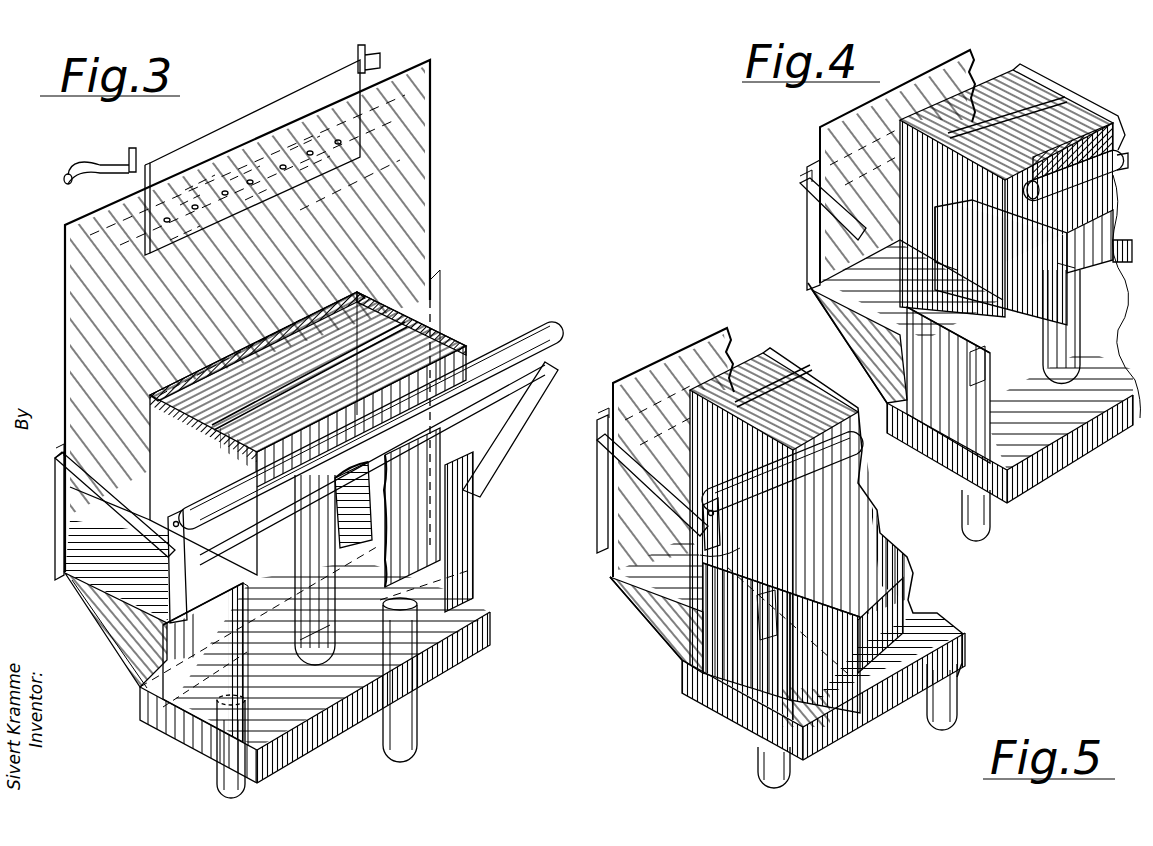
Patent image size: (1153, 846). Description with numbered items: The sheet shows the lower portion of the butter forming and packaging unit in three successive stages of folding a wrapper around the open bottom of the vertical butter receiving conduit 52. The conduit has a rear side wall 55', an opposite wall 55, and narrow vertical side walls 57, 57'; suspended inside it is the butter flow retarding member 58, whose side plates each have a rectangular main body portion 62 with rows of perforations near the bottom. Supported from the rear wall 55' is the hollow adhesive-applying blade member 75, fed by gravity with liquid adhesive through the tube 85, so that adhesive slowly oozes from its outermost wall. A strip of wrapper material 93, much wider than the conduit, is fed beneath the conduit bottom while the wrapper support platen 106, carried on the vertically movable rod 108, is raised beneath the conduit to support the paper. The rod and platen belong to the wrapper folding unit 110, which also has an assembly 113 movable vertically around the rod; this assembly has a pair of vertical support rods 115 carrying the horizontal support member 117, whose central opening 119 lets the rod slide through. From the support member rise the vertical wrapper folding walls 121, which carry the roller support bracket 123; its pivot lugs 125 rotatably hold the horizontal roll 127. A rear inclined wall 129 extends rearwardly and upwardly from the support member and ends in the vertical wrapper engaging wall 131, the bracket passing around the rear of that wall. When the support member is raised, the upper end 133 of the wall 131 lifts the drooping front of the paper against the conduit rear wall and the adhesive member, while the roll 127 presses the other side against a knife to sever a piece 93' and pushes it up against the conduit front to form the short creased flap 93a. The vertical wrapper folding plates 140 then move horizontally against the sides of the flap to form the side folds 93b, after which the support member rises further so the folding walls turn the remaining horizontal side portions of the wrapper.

In FIG. 3, the butter receiving conduit 52 is at (142, 453).
In FIG. 4, the butter receiving conduit 52 is at (1118, 130).
In FIG. 5, the butter receiving conduit 52 is at (826, 534).
In FIG. 3, the side wall of the conduit 55 is at (411, 323).
In FIG. 4, the side wall of the conduit 55 is at (1073, 151).
In FIG. 3, the rear side wall of the conduit 55' is at (257, 346).
In FIG. 3, the narrow vertical side wall of the conduit 57 is at (212, 450).
In FIG. 3, the narrow vertical side wall of the conduit 57' is at (455, 305).
In FIG. 3, the butter flow retarding member 58 is at (305, 368).
In FIG. 4, the butter flow retarding member 58 is at (1064, 88).
In FIG. 5, the butter flow retarding member 58 is at (826, 368).
In FIG. 3, the rectangular main body portion 62 is at (384, 300).
In FIG. 3, the adhesive-applying blade member 75 is at (138, 236).
In FIG. 3, the tube 85 is at (92, 170).
In FIG. 4, the strip of wrapper material 93 is at (889, 166).
In FIG. 5, the strip of wrapper material 93 is at (673, 452).
In FIG. 3, the severed piece of wrapping paper 93' is at (222, 316).
In FIG. 3, the short creased flap 93a is at (455, 436).
In FIG. 4, the short creased flap 93a is at (1060, 250).
In FIG. 5, the short creased flap 93a is at (725, 548).
In FIG. 4, the side folds 93b is at (938, 210).
In FIG. 3, the wrapper support platen 106 is at (480, 490).
In FIG. 3, the vertically movable rod 108 is at (336, 590).
In FIG. 4, the vertically movable rod 108 is at (1080, 333).
In FIG. 3, the wrapper folding unit 110 is at (131, 702).
In FIG. 3, the assembly 113 is at (181, 750).
In FIG. 3, the vertical support rods 115 is at (383, 758).
In FIG. 4, the vertical support rods 115 is at (992, 530).
In FIG. 5, the vertical support rods 115 is at (755, 768).
In FIG. 3, the horizontal support member 117 is at (480, 610).
In FIG. 4, the horizontal support member 117 is at (1010, 426).
In FIG. 5, the horizontal support member 117 is at (823, 686).
In FIG. 3, the central opening 119 is at (308, 662).
In FIG. 3, the vertical wrapper folding walls 121 is at (455, 553).
In FIG. 4, the vertical wrapper folding walls 121 is at (960, 385).
In FIG. 5, the vertical wrapper folding walls 121 is at (748, 578).
In FIG. 3, the roller support bracket 123 is at (166, 580).
In FIG. 5, the roller support bracket 123 is at (667, 497).
In FIG. 3, the pivot lugs 125 is at (560, 354).
In FIG. 4, the pivot lugs 125 is at (1075, 175).
In FIG. 3, the horizontal roll 127 is at (345, 478).
In FIG. 5, the horizontal roll 127 is at (826, 470).
In FIG. 3, the rear inclined wall 129 is at (120, 660).
In FIG. 4, the rear inclined wall 129 is at (812, 292).
In FIG. 5, the rear inclined wall 129 is at (656, 604).
In FIG. 3, the vertical wrapper engaging wall 131 is at (55, 517).
In FIG. 4, the vertical wrapper engaging wall 131 is at (806, 241).
In FIG. 3, the upper end of the wrapper engaging wall 133 is at (56, 445).
In FIG. 4, the upper end of the wrapper engaging wall 133 is at (806, 178).
In FIG. 5, the upper end of the wrapper engaging wall 133 is at (600, 428).
In FIG. 4, the vertical wrapper folding plates 140 is at (1080, 266).
In FIG. 5, the vertical wrapper folding plates 140 is at (857, 702).